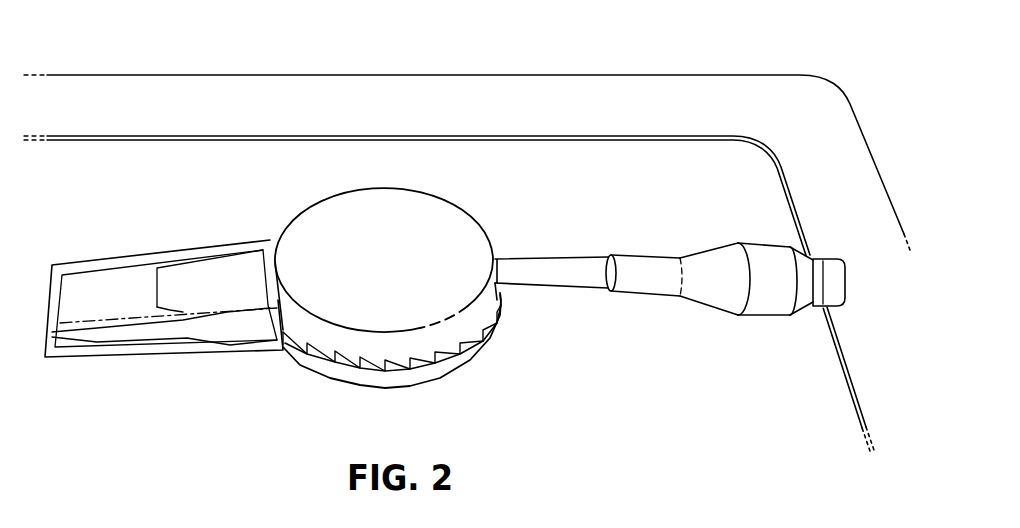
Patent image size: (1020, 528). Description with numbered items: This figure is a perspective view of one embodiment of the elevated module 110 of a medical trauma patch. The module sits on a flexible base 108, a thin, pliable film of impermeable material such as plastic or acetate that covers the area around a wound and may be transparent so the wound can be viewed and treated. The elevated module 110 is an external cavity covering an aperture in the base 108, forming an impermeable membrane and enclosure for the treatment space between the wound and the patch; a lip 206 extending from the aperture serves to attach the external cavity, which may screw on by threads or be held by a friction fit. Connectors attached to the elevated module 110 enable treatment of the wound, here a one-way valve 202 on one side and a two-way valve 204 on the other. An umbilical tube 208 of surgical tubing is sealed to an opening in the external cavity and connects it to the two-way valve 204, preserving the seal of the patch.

The flexible base 108 is at (634, 185).
The elevated module 110 is at (355, 210).
The one-way valve 202 is at (213, 258).
The two-way valve 204 is at (763, 257).
The lip 206 is at (322, 367).
The umbilical tube 208 is at (560, 277).